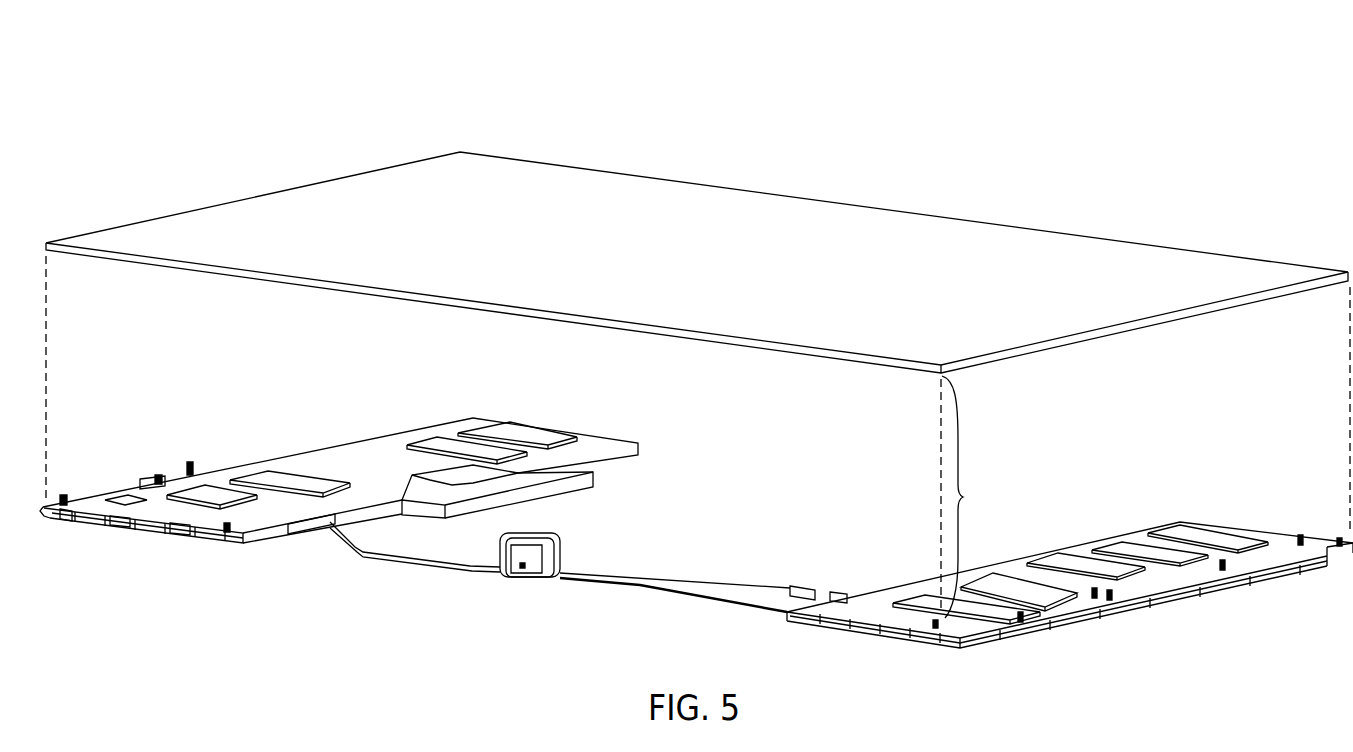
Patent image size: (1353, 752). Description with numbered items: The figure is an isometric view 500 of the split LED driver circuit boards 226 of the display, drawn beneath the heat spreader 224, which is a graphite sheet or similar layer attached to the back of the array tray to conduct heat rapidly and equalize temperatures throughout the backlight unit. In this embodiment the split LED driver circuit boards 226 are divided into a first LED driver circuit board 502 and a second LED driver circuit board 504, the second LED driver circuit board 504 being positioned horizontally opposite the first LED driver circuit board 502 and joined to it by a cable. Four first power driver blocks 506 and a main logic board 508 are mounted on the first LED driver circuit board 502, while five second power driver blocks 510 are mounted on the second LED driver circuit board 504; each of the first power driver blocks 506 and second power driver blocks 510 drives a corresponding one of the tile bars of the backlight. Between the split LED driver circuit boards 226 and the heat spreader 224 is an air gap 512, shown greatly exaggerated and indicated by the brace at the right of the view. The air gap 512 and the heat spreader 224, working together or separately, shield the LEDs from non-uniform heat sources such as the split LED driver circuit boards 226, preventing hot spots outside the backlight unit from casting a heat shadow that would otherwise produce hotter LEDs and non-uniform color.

The isometric view 500 is at (187, 90).
The heat spreader 224 is at (698, 262).
The split LED driver circuit boards 226 is at (923, 534).
The air gap 512 is at (976, 497).
The first LED driver circuit board 502 is at (143, 533).
The second LED driver circuit board 504 is at (848, 635).
The first power driver blocks 506 is at (277, 490).
The main logic board 508 is at (423, 518).
The second power driver blocks 510 is at (1057, 607).